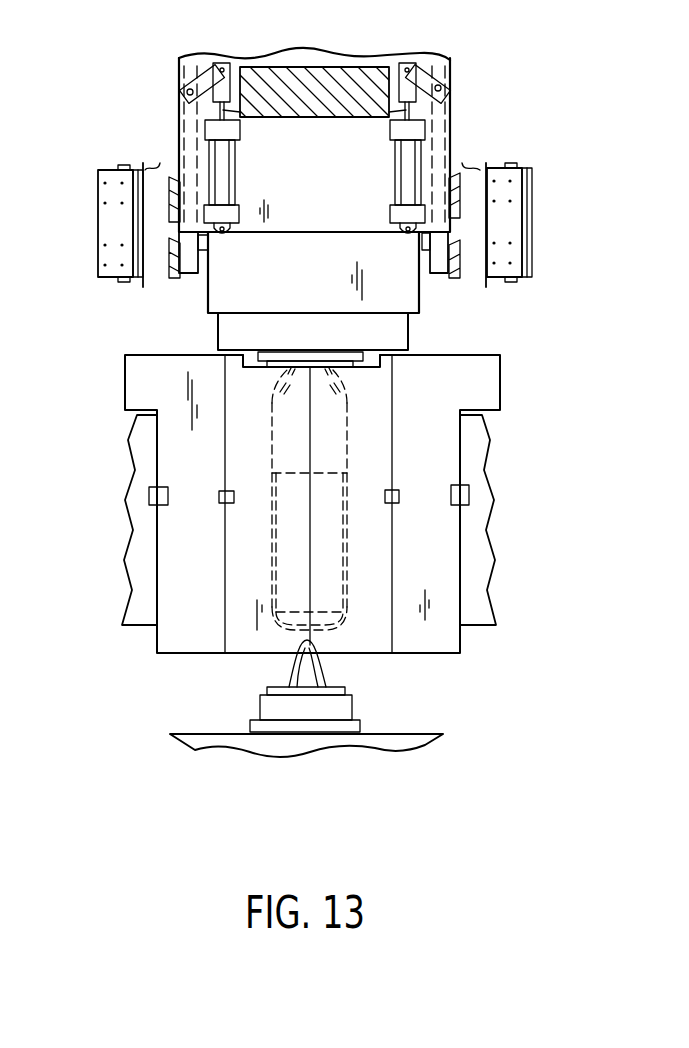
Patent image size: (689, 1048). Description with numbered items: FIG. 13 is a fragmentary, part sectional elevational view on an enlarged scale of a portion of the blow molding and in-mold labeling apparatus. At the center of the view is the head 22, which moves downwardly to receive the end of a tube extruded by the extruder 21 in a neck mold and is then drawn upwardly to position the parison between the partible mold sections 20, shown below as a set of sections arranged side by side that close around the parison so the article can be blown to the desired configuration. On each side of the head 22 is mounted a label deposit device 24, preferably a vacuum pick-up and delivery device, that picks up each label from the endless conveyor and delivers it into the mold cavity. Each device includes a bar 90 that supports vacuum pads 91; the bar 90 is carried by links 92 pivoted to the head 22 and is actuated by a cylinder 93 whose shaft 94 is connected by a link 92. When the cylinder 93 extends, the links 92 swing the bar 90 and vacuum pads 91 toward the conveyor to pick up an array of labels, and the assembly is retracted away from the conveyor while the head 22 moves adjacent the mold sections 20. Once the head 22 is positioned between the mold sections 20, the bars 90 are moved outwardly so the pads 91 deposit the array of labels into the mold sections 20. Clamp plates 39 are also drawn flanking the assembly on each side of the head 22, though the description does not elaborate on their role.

The partible molds 20 is at (258, 539).
The extruder 21 is at (303, 742).
The head 22 is at (318, 272).
The label deposit devices 24 is at (166, 113).
The clamp plates 39 is at (98, 232).
The bar 90 is at (190, 267).
The vacuum pads 91 is at (169, 262).
The links 92 is at (205, 80).
The cylinder 93 is at (403, 165).
The shaft 94 is at (389, 112).